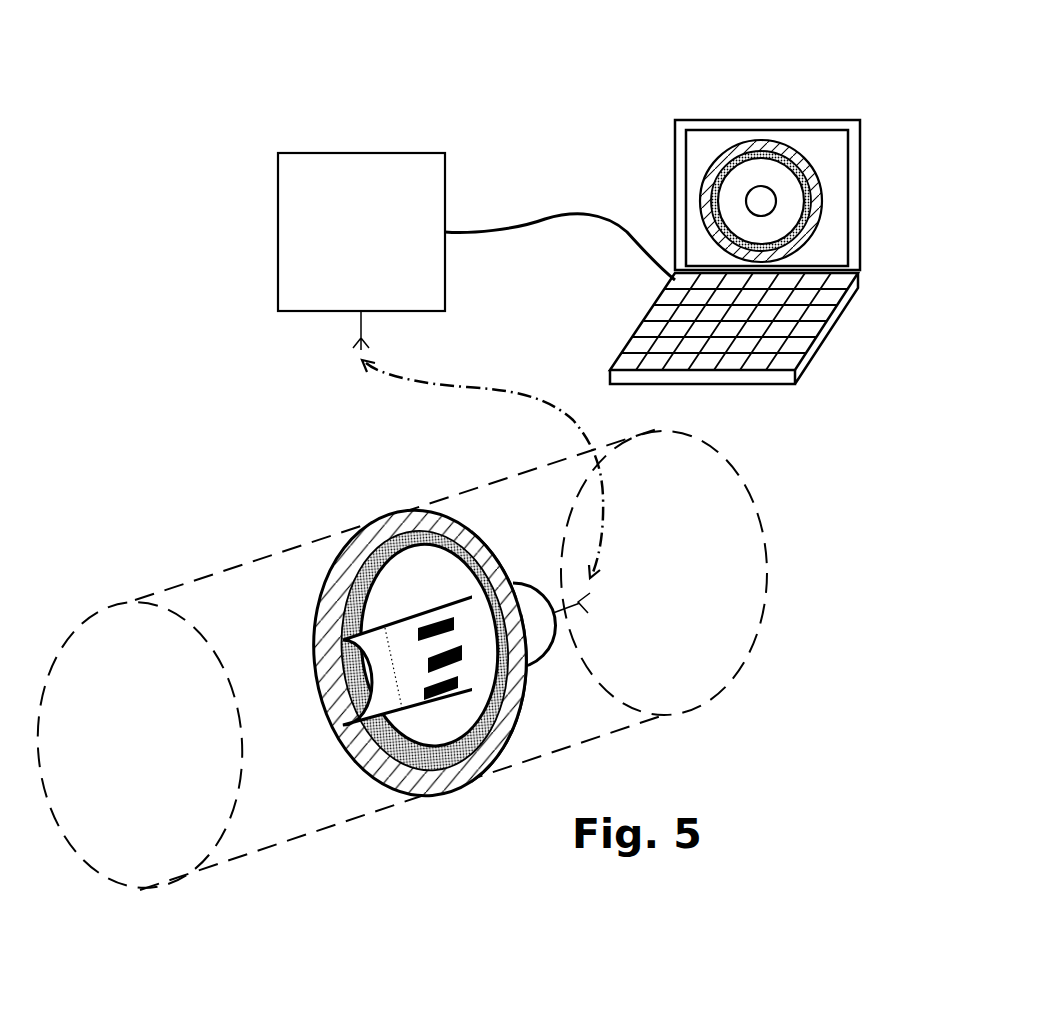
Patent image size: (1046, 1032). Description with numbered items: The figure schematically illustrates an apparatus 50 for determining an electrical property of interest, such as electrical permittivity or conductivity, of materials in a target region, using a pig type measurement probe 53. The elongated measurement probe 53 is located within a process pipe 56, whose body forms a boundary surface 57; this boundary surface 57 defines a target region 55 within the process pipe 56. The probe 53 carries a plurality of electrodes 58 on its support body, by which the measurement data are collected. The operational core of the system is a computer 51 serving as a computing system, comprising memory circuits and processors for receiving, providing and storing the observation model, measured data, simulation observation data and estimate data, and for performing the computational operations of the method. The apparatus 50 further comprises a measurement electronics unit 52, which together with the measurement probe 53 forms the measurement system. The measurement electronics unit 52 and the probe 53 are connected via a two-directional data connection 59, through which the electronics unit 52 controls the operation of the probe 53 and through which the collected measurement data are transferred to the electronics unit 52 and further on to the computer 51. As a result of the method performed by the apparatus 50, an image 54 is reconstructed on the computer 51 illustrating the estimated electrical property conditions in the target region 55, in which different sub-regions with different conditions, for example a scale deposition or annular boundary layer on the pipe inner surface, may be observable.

The apparatus 50 is at (206, 106).
The computer 51 is at (675, 218).
The measurement electronics unit 52 is at (388, 247).
The pig type measurement probe 53 is at (342, 657).
The image 54 is at (718, 158).
The target region 55 is at (453, 744).
The process pipe 56 is at (397, 642).
The boundary surface 57 is at (481, 488).
The electrodes 58 is at (446, 618).
The two-directional data connection 59 is at (607, 500).